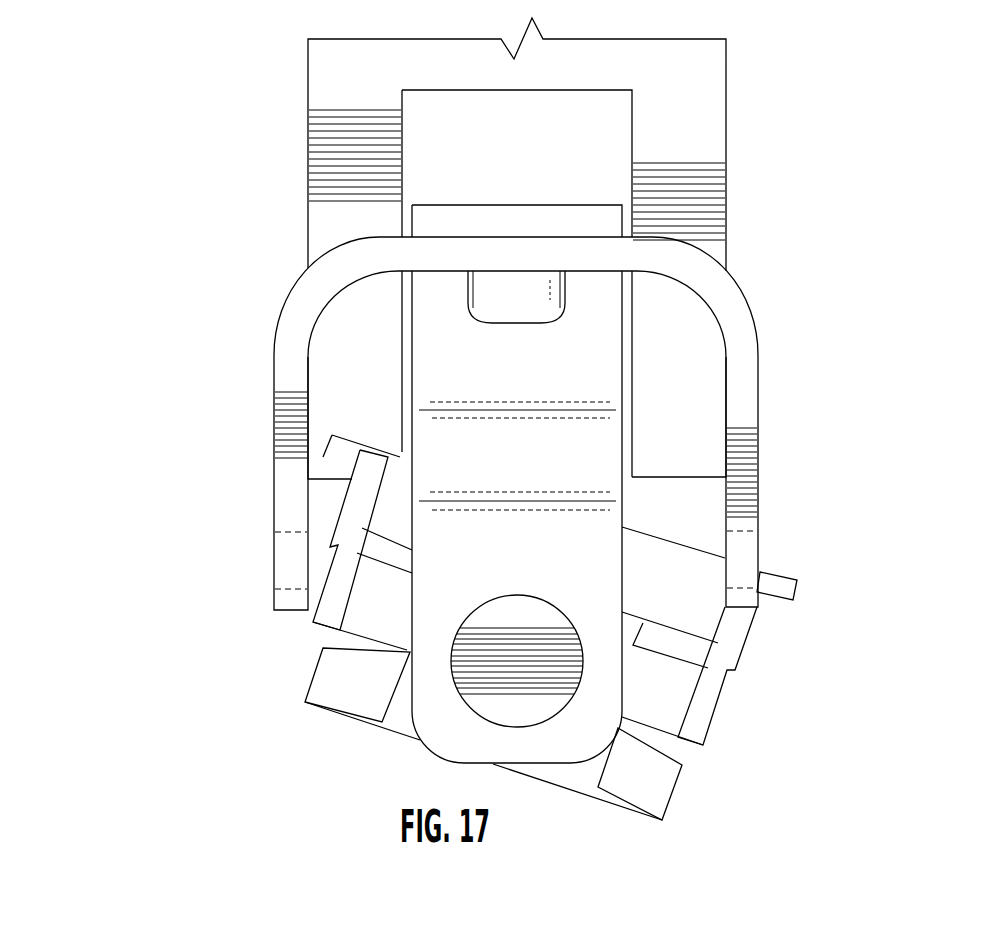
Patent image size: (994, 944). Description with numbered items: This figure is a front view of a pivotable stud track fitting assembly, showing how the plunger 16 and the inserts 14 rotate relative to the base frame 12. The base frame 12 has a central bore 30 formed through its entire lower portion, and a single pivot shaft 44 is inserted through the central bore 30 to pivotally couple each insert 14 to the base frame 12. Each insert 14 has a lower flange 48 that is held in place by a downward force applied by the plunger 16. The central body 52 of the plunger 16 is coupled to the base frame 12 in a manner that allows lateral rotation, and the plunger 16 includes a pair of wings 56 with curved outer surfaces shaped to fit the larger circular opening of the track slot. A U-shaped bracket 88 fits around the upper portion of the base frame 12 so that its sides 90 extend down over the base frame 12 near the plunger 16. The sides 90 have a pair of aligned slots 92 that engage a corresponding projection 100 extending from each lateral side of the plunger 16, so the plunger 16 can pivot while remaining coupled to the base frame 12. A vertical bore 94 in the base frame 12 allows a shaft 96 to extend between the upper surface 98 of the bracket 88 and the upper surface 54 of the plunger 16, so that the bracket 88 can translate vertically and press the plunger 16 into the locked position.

The base frame 12 is at (337, 88).
The pivotable insert 14 is at (363, 690).
The plunger 16 is at (338, 595).
The central bore 30 is at (462, 685).
The pivot shaft 44 is at (537, 663).
The lower flange 48 is at (337, 667).
The central body 52 is at (403, 610).
The upper surface 54 is at (400, 457).
The wings 56 is at (352, 568).
The U-shaped bracket 88 is at (745, 478).
The sides 90 is at (290, 390).
The slots 92 is at (740, 563).
The vertical bore 94 is at (490, 323).
The shaft 96 is at (507, 296).
The upper surface 98 is at (672, 263).
The projection 100 is at (797, 578).